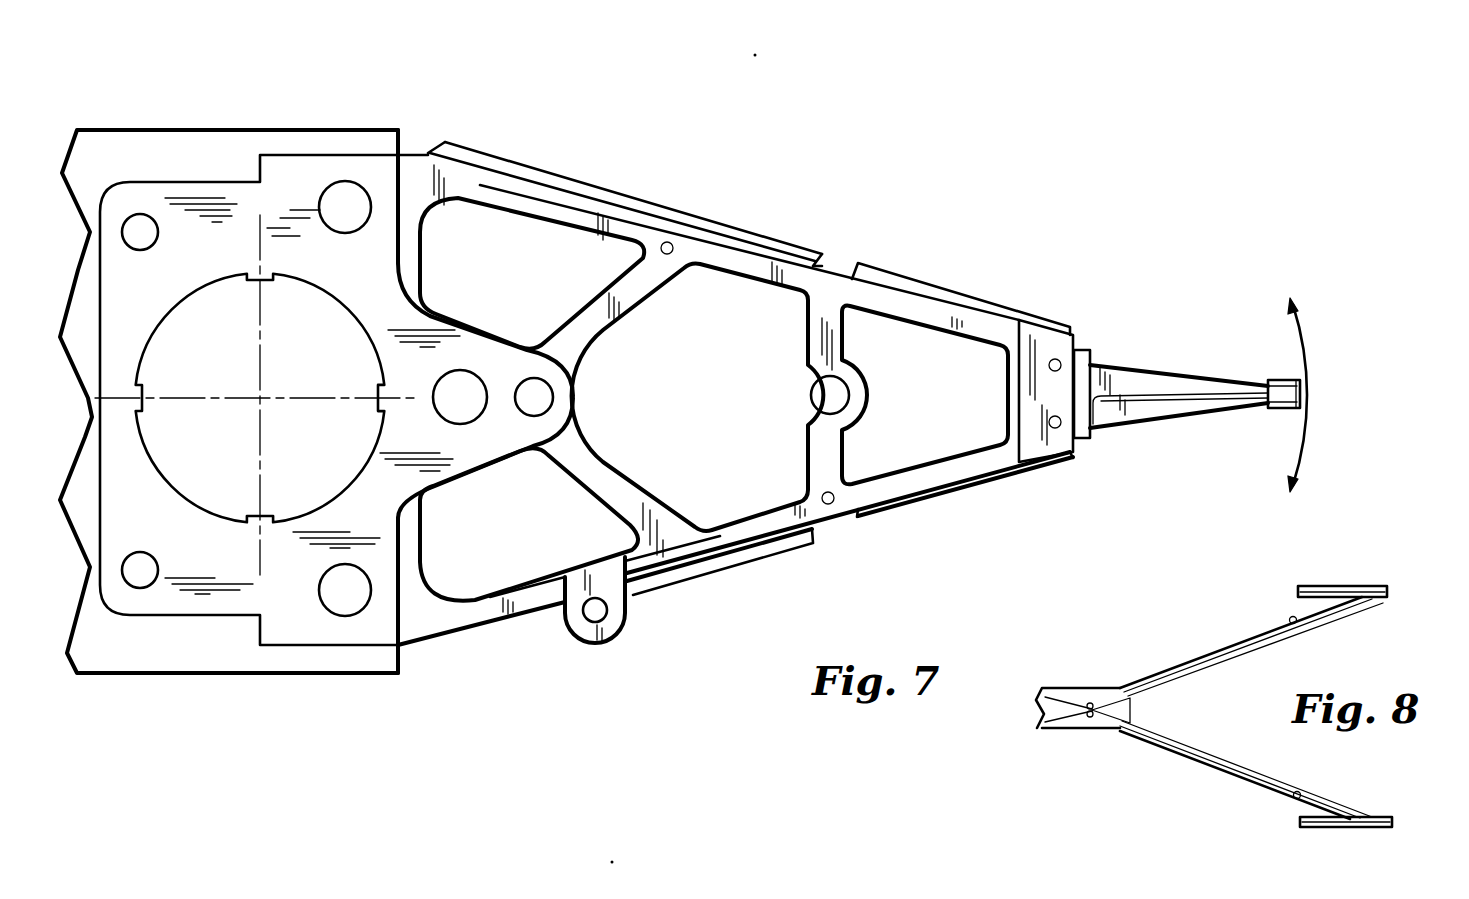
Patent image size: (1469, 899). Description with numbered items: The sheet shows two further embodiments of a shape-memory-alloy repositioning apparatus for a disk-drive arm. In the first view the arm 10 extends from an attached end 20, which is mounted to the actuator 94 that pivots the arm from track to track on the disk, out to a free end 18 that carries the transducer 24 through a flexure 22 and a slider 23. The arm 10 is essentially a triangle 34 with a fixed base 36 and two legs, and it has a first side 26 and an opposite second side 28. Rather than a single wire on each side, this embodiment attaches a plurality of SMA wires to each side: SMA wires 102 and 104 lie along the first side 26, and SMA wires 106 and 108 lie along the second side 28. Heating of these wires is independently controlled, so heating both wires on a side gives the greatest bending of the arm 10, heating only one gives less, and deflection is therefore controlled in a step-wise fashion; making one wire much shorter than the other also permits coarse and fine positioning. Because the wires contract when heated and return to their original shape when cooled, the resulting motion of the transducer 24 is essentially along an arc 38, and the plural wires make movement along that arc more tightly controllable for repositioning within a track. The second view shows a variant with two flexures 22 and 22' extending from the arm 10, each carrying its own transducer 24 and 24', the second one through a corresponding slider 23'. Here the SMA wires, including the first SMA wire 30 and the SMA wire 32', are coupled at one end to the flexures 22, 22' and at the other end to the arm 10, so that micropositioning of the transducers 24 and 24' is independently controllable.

In FIG. 7, the arm 10 is at (520, 95).
In FIG. 7, the free end 18 is at (1063, 458).
In FIG. 7, the attached end 20 is at (173, 182).
In FIG. 8, the flexure 22 is at (1254, 646).
In FIG. 8, the flexure 22' is at (1248, 775).
In FIG. 7, the slider 23 is at (1230, 392).
In FIG. 8, the slider 23 is at (1303, 597).
In FIG. 8, the lower pad 23' is at (1374, 802).
In FIG. 7, the transducer 24 is at (1217, 398).
In FIG. 8, the transducer 24 is at (1342, 574).
In FIG. 8, the transducer 24' is at (1372, 833).
In FIG. 7, the first side 26 is at (968, 312).
In FIG. 7, the second side 28 is at (987, 475).
In FIG. 8, the first shape memory alloy wire 30 is at (1158, 672).
In FIG. 8, the SMA wire 32' is at (1246, 762).
In FIG. 7, the triangle 34 is at (583, 198).
In FIG. 7, the fixed base 36 is at (408, 262).
In FIG. 7, the arc 38 is at (1306, 355).
In FIG. 7, the actuator 94 is at (205, 130).
In FIG. 7, the SMA wire 102 is at (790, 237).
In FIG. 7, the SMA wire 104 is at (897, 272).
In FIG. 7, the SMA wire 106 is at (708, 562).
In FIG. 7, the SMA wire 108 is at (878, 518).